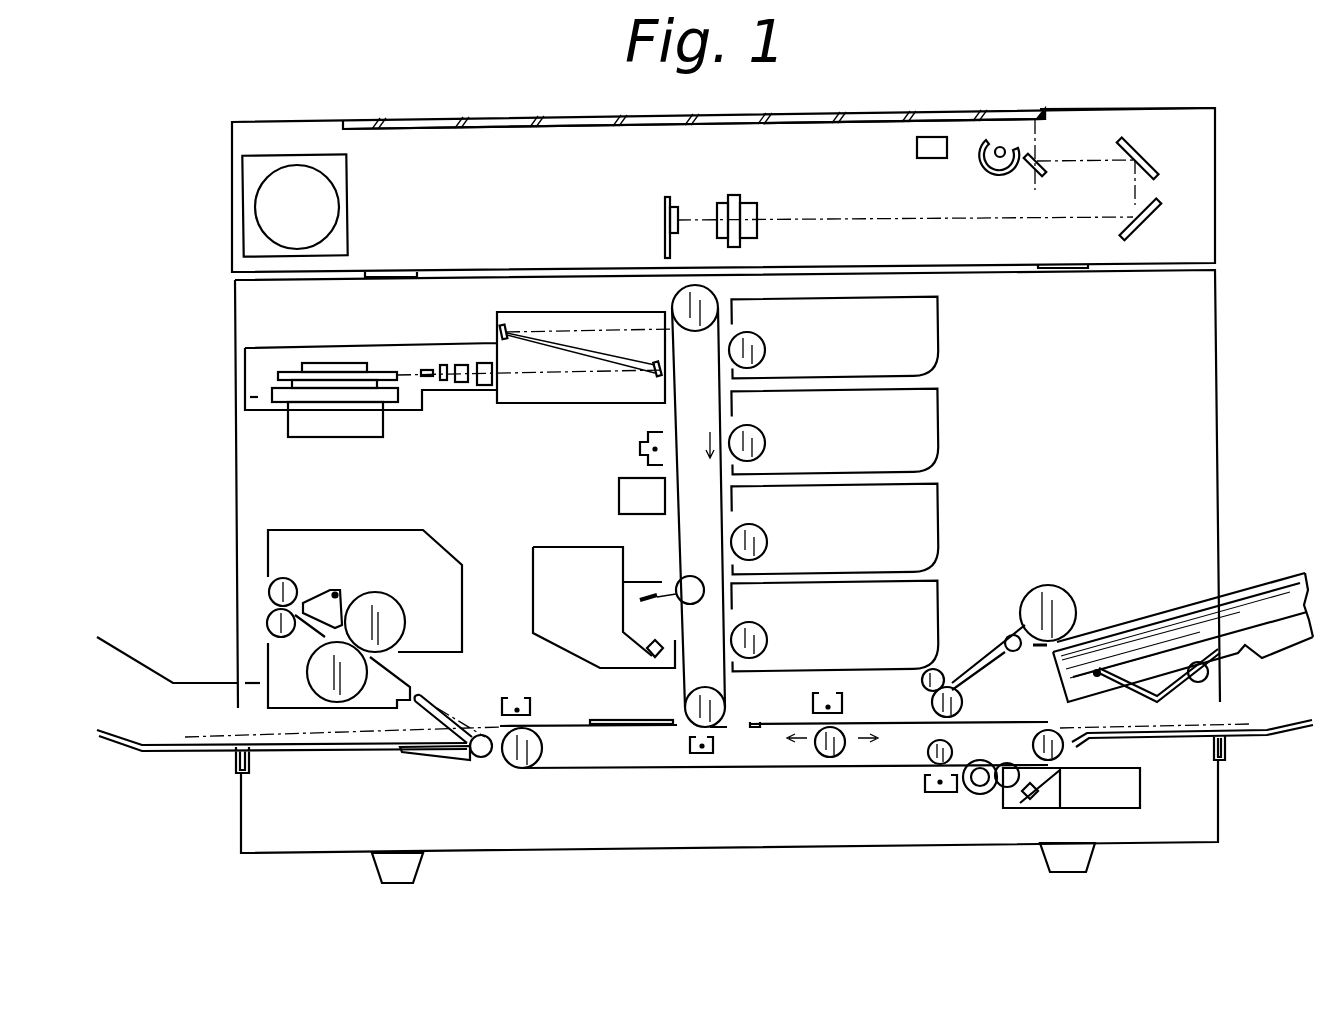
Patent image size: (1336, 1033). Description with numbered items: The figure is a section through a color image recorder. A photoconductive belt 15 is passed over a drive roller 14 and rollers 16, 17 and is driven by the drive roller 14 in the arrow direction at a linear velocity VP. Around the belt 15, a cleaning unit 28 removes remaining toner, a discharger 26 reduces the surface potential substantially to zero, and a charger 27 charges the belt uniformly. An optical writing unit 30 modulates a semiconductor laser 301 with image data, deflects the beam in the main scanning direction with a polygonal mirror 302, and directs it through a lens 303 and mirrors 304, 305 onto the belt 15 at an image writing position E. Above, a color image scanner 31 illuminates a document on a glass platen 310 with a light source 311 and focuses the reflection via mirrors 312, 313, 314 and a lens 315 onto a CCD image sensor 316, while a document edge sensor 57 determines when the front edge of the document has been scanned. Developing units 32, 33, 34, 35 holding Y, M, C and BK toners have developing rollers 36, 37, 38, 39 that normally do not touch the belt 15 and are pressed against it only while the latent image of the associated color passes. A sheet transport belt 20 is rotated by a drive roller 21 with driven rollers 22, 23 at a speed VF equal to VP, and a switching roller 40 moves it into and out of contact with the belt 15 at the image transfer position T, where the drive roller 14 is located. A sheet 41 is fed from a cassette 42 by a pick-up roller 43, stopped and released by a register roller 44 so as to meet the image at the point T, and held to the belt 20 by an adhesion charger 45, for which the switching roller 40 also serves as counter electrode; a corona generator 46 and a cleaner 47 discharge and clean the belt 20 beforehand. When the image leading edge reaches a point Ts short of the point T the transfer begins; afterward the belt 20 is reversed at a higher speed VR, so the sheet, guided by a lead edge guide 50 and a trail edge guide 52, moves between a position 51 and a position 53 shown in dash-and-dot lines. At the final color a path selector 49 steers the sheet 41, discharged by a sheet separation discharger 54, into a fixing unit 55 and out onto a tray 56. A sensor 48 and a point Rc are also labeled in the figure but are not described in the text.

The drive roller 14 is at (704, 687).
The photoconductive belt 15 is at (672, 418).
The roller 16 is at (692, 322).
The roller 17 is at (690, 576).
The sheet transport belt 20 is at (636, 768).
The drive roller 21 is at (520, 769).
The driven roller 22 is at (1063, 745).
The driven roller 23 is at (953, 752).
The discharger 26 is at (618, 492).
The charger 27 is at (640, 455).
The cleaning unit 28 is at (565, 547).
The optical writing unit 30 is at (418, 345).
The color image scanner 31 is at (1120, 108).
The Y developing unit 32 is at (938, 345).
The M developing unit 33 is at (940, 434).
The C developing unit 34 is at (942, 516).
The BK developing unit 35 is at (940, 606).
The developing roller 36 is at (766, 350).
The developing roller 37 is at (763, 445).
The developing roller 38 is at (768, 542).
The developing roller 39 is at (768, 641).
The switching roller 40 is at (830, 758).
The sheet 41 is at (1153, 618).
The cassette 42 is at (1270, 656).
The pick-up roller 43 is at (1068, 604).
The register roller 44 is at (963, 703).
The adhesion charger 45 is at (913, 687).
The corona generator 46 is at (935, 797).
The cleaner 47 is at (1003, 800).
The paper sensor 48 is at (688, 746).
The path selector 49 is at (450, 758).
The lead edge guide 50 is at (330, 751).
The position 51 is at (572, 722).
The trail edge guide 52 is at (1168, 738).
The position 53 is at (757, 723).
The sheet separation discharger 54 is at (520, 696).
The fixing unit 55 is at (397, 530).
The tray 56 is at (158, 672).
The document edge sensor 57 is at (920, 160).
The semiconductor laser 301 is at (422, 371).
The polygonal mirror 302 is at (272, 372).
The lens 303 is at (458, 362).
The mirror 304 is at (652, 373).
The mirror 305 is at (507, 328).
The glass platen 310 is at (598, 130).
The light source 311 is at (980, 167).
The mirror 312 is at (1035, 178).
The mirror 313 is at (1142, 148).
The mirror 314 is at (1150, 216).
The lens 315 is at (740, 194).
The CCD image sensor 316 is at (677, 207).
The image writing position E is at (674, 332).
The linear velocity of photoconductive belt VP is at (699, 463).
The image transfer position T is at (732, 743).
The forward linear speed of transport belt VF is at (779, 743).
The reverse return speed VR is at (889, 745).
The point Ts is at (713, 704).
The registration point Rc is at (748, 728).